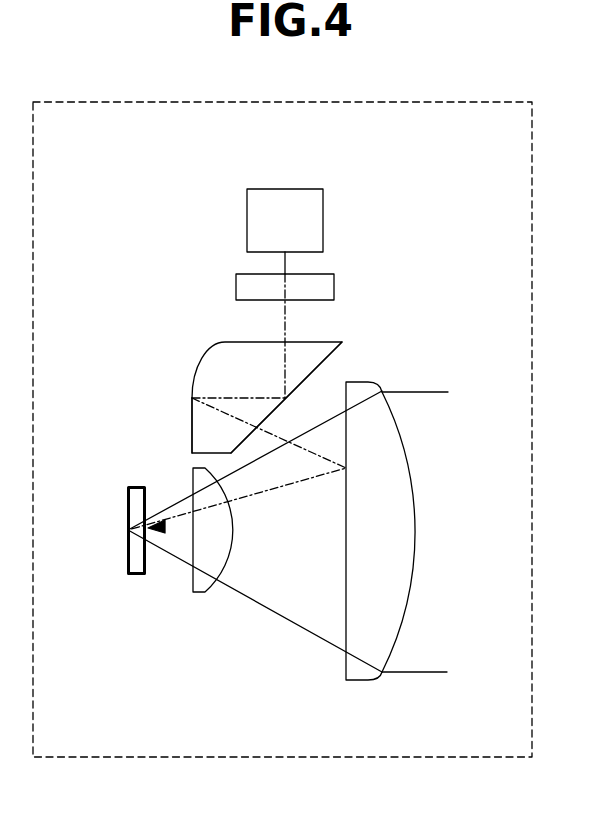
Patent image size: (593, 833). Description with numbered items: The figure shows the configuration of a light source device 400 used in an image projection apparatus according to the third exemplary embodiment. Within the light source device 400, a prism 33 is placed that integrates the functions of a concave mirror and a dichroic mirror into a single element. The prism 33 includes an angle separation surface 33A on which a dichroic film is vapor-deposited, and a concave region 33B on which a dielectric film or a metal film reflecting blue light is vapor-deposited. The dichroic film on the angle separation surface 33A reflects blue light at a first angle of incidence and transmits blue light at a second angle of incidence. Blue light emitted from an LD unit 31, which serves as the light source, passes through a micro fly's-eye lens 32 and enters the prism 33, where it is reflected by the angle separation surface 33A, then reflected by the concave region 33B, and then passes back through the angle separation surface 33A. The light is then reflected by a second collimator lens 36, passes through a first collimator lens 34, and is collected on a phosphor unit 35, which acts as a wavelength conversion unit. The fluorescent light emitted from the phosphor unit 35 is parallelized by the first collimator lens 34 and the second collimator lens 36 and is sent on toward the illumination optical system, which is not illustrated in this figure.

The light source device 400 is at (283, 758).
The LD unit 31 is at (247, 207).
The micro fly's-eye lens 32 is at (334, 284).
The prism 33 is at (210, 344).
The angle separation surface 33A is at (343, 344).
The concave region 33B is at (192, 421).
The first collimator lens 34 is at (201, 593).
The phosphor unit 35 is at (128, 576).
The second collimator lens 36 is at (415, 518).